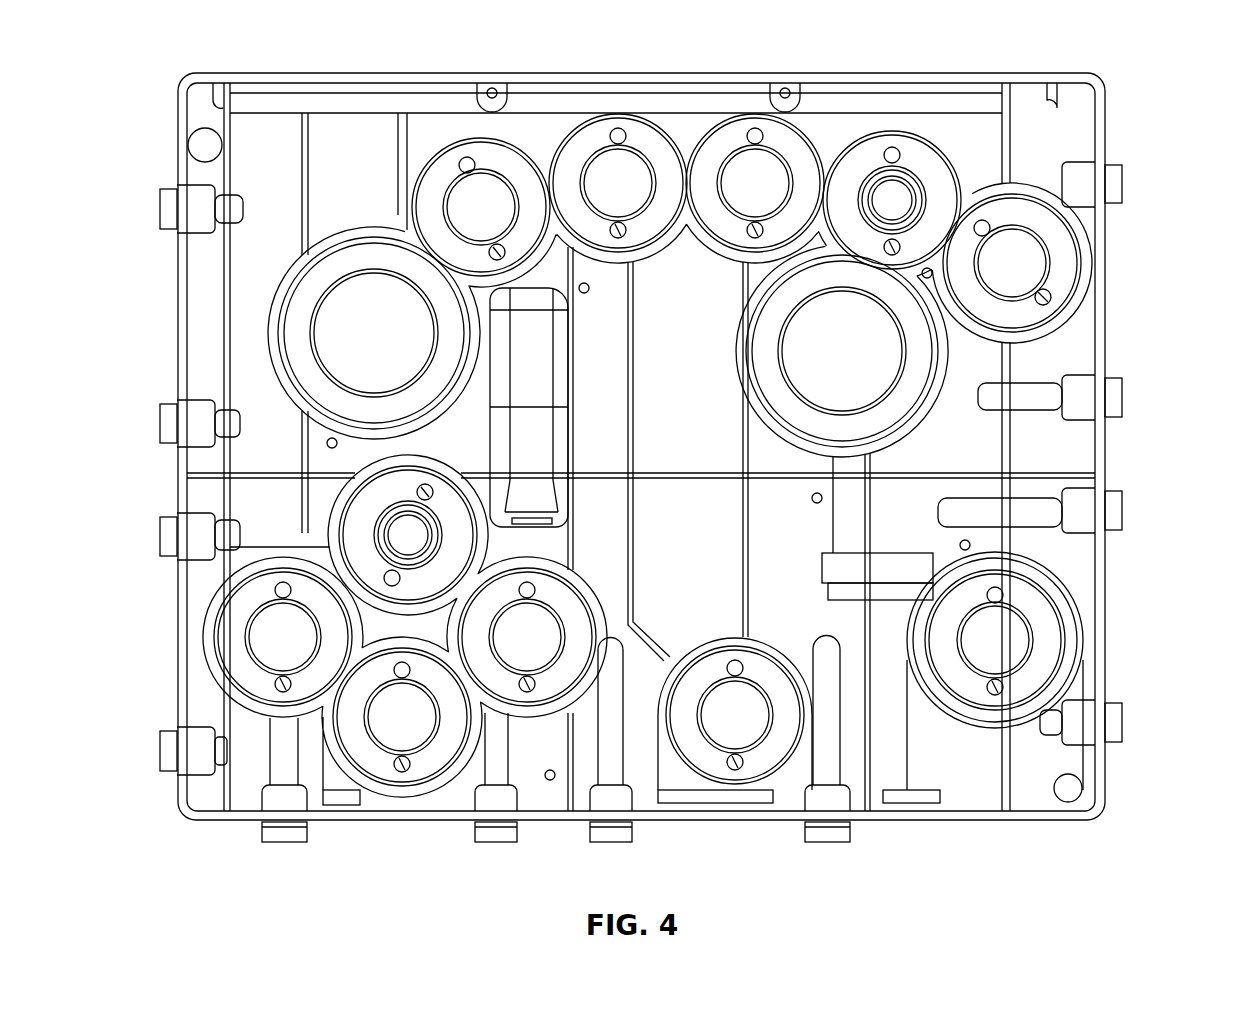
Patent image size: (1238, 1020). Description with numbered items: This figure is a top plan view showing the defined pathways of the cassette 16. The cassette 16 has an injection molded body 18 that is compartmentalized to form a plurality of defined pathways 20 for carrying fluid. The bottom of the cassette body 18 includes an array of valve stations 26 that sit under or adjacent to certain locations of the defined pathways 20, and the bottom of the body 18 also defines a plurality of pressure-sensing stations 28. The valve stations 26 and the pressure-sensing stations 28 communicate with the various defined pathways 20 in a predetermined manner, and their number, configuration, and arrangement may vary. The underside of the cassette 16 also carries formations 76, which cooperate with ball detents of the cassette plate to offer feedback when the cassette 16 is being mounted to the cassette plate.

The cassette 16 is at (1123, 134).
The body 18 is at (243, 320).
The defined pathways 20 is at (985, 512).
The valve stations 26 is at (517, 177).
The pressure-sensing stations 28 is at (362, 295).
The formations 76 is at (491, 91).